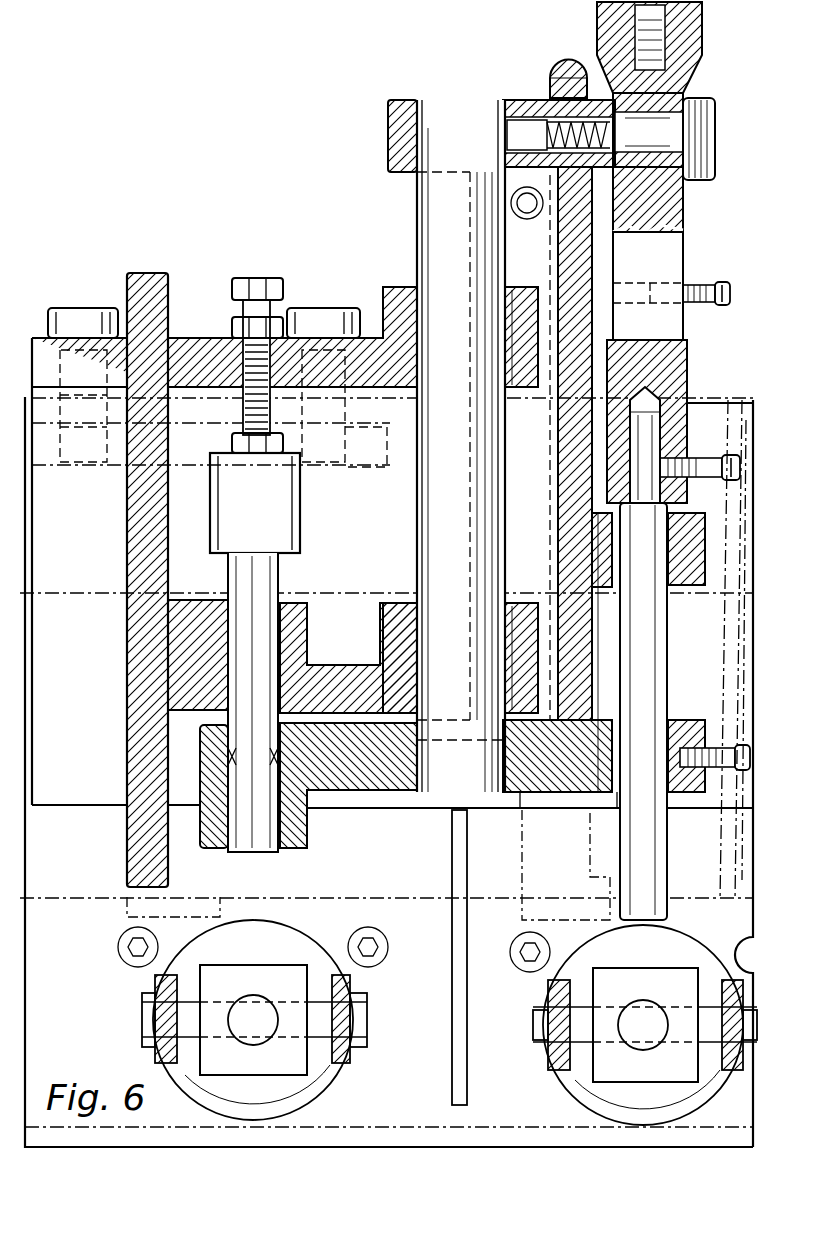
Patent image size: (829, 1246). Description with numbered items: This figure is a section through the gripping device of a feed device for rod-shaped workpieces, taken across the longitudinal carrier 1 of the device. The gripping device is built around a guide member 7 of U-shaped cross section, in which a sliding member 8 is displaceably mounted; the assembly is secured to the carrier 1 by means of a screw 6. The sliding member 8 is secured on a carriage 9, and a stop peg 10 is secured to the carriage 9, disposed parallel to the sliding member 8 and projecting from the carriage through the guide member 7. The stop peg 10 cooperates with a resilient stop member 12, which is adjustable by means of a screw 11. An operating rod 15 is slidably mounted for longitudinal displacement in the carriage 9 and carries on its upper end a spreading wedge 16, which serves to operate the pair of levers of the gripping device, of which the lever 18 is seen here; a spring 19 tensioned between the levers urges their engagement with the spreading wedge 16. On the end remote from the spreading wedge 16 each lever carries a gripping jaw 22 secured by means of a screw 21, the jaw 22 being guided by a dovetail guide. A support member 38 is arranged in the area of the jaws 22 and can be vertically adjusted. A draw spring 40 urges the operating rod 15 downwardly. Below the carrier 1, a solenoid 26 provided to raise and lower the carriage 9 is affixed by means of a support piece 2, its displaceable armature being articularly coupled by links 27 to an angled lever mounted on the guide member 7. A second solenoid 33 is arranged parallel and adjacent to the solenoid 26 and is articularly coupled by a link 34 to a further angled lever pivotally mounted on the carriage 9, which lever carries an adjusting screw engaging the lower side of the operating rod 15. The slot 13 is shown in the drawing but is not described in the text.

The longitudinal carrier 1 is at (722, 679).
The support piece 2 is at (722, 874).
The screw 6 is at (75, 312).
The guide member 7 is at (142, 275).
The sliding member 8 is at (433, 525).
The carriage 9 is at (352, 790).
The stop peg 10 is at (275, 576).
The screw 11 is at (257, 278).
The resilient stop member 12 is at (275, 503).
The slot 13 is at (440, 792).
The operating rod 15 is at (652, 625).
The spreading wedge 16 is at (690, 440).
The lever 18 is at (683, 250).
The spring 19 is at (718, 305).
The screw 21 is at (702, 38).
The gripping jaw 22 is at (700, 62).
The solenoid 26 is at (432, 1009).
The link 27 is at (352, 1063).
The solenoid 33 is at (738, 934).
The link 34 is at (735, 1080).
The support member 38 is at (548, 75).
The draw spring 40 is at (722, 645).